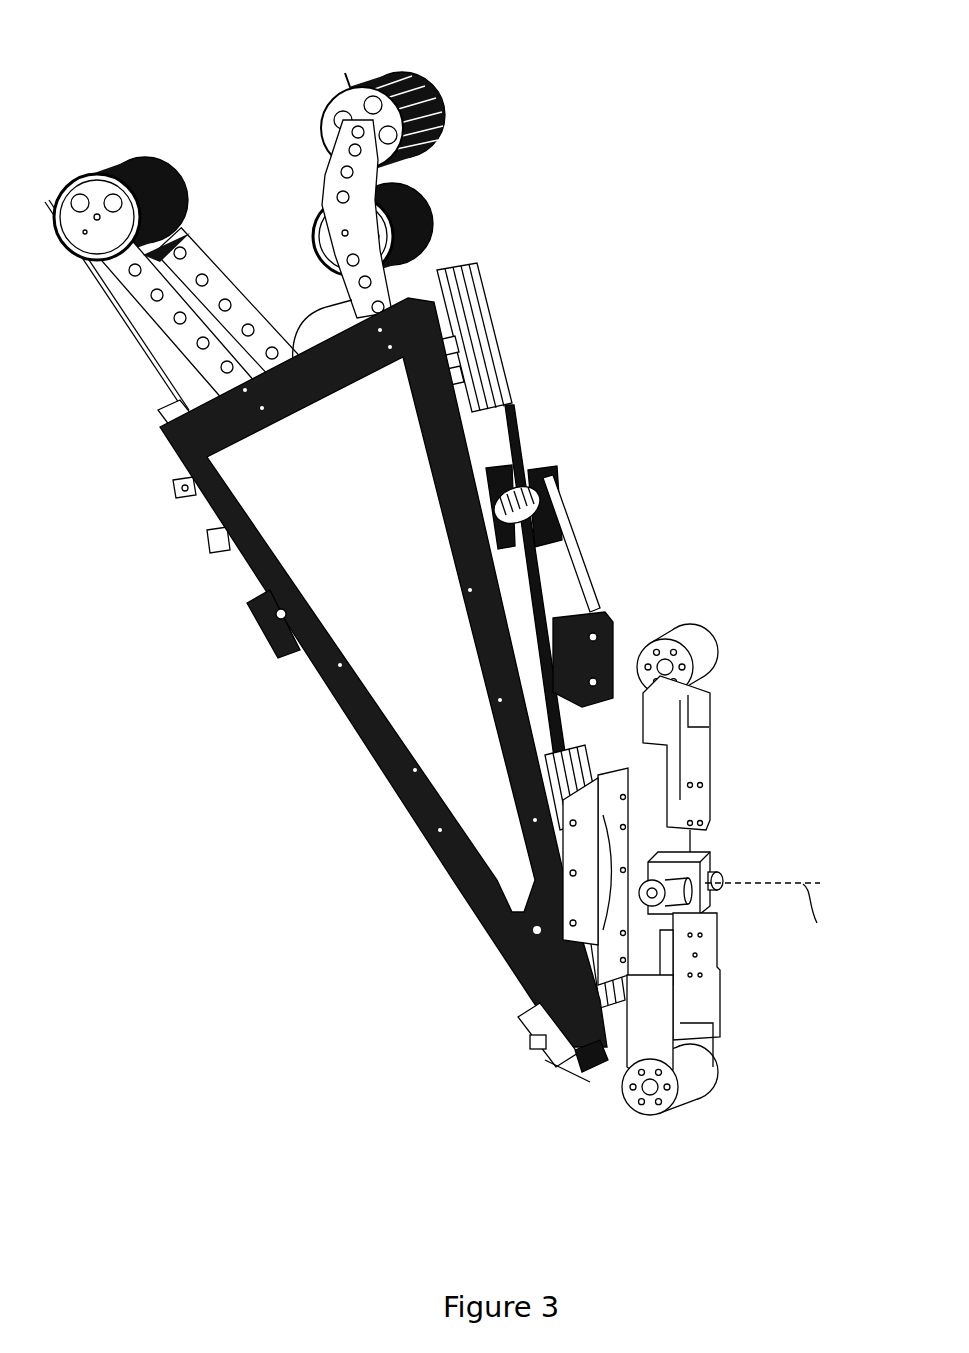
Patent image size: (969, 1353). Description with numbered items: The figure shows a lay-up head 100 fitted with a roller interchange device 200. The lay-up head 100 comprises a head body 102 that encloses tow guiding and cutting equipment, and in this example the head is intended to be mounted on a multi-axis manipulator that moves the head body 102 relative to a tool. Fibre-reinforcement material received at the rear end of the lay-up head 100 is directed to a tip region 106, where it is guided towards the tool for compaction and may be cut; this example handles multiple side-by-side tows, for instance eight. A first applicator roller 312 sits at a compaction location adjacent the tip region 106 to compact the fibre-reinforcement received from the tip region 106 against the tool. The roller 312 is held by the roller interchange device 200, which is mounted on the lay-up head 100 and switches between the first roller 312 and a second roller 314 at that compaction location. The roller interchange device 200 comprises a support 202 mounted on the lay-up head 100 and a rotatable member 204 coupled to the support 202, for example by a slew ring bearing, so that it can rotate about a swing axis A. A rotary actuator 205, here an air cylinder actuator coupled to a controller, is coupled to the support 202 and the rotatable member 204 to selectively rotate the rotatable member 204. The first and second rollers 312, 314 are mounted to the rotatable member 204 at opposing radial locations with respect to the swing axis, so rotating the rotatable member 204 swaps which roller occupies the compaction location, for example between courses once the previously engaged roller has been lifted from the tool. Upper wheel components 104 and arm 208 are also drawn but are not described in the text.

The lay-up head 100 is at (110, 24).
The head body 102 is at (423, 725).
The upper wheel assembly 104 is at (432, 213).
The tip region 106 is at (607, 1080).
The roller interchange device 200 is at (761, 850).
The support 202 is at (583, 903).
The rotatable member 204 is at (667, 850).
The rotary actuator 205 is at (707, 897).
The arm 208 is at (647, 792).
The first applicator roller 312 is at (697, 1087).
The second roller 314 is at (690, 640).